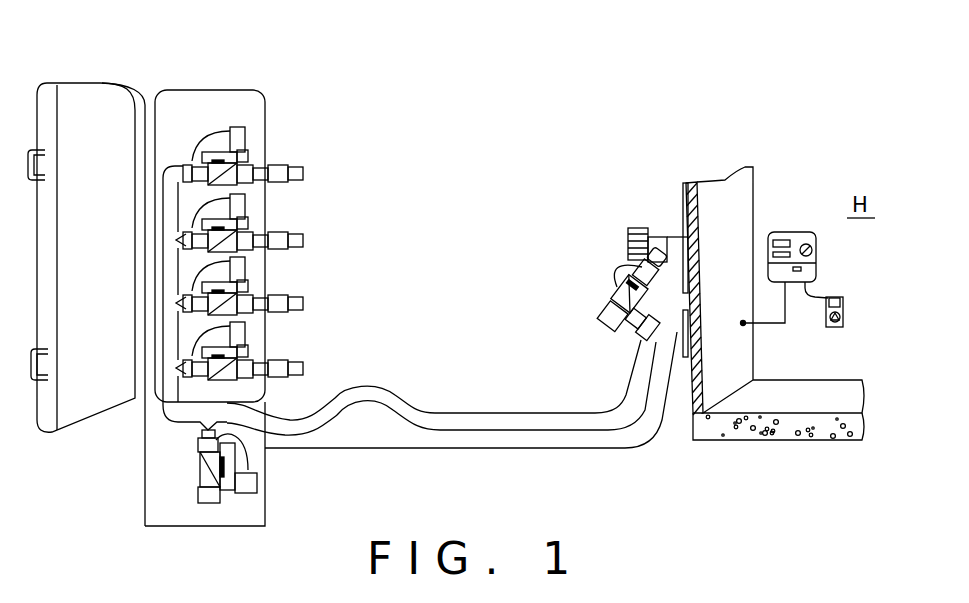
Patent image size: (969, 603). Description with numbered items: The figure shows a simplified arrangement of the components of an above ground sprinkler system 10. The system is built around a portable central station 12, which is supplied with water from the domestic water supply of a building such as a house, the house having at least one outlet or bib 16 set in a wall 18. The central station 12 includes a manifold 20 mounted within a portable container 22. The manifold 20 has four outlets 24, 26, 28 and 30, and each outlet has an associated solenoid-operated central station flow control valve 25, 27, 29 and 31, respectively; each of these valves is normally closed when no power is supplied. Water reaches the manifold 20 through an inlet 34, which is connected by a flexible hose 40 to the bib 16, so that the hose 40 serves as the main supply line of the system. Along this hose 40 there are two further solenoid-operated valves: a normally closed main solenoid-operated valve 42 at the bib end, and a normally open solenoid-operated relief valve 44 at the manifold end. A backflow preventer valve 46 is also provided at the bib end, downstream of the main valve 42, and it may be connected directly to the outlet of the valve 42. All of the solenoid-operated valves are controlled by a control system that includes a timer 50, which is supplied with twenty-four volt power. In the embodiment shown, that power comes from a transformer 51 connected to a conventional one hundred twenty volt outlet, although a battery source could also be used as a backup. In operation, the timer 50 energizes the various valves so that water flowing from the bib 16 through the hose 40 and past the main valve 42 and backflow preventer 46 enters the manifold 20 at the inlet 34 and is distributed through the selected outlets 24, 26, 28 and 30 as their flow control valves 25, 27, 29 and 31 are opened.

The above ground sprinkler system 10 is at (529, 76).
The portable central station 12 is at (225, 78).
The outlet or bib 16 is at (667, 237).
The wall 18 is at (727, 202).
The manifold 20 is at (160, 207).
The portable container 22 is at (93, 422).
The outlet 24 is at (303, 368).
The solenoid-operated central station flow control valve 25 is at (245, 333).
The outlet 26 is at (303, 303).
The solenoid-operated central station flow control valve 27 is at (245, 268).
The outlet 28 is at (303, 240).
The solenoid-operated central station flow control valve 29 is at (245, 205).
The outlet 30 is at (303, 173).
The solenoid-operated central station flow control valve 31 is at (245, 138).
The inlet 34 is at (184, 425).
The flexible hose 40 is at (443, 410).
The main solenoid-operated valve 42 is at (617, 275).
The relief valve 44 is at (257, 460).
The backflow preventer valve 46 is at (617, 333).
The timer 50 is at (820, 257).
The transformer 51 is at (845, 314).